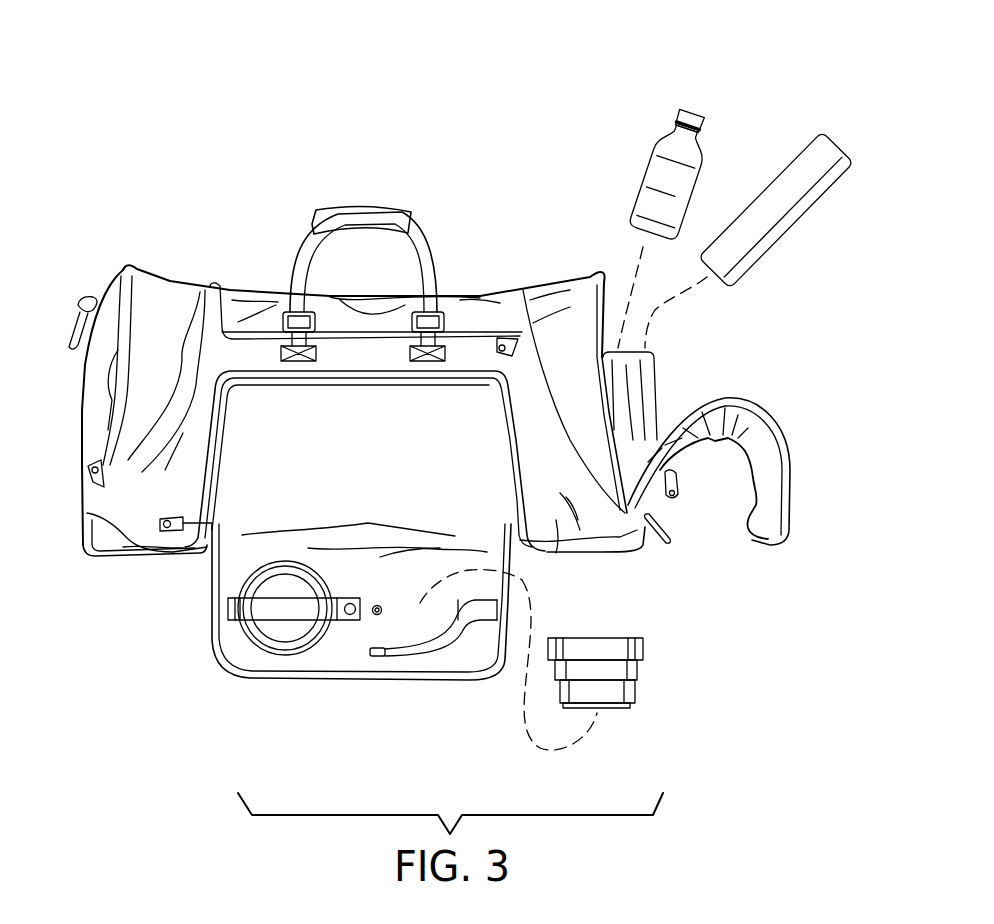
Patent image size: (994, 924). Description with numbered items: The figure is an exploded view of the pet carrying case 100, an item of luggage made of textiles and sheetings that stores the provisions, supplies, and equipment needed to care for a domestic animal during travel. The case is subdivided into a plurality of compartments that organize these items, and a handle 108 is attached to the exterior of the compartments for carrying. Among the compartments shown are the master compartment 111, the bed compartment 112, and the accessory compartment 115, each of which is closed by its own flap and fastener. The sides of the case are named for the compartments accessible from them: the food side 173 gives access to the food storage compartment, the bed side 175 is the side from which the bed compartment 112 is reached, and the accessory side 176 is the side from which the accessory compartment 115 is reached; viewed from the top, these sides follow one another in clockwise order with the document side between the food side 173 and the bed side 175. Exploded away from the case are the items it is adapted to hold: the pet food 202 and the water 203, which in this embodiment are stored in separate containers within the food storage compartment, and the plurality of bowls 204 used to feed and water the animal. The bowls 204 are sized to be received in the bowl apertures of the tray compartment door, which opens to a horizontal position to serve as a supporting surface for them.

The pet carrying case 100 is at (127, 96).
The handle 108 is at (422, 250).
The master compartment 111 is at (493, 300).
The bed compartment 112 is at (655, 498).
The accessory compartment 115 is at (243, 510).
The food side 173 is at (82, 410).
The bed side 175 is at (752, 436).
The accessory side 176 is at (133, 507).
The pet food 202 is at (780, 233).
The water 203 is at (700, 160).
The plurality of bowls 204 is at (292, 652).